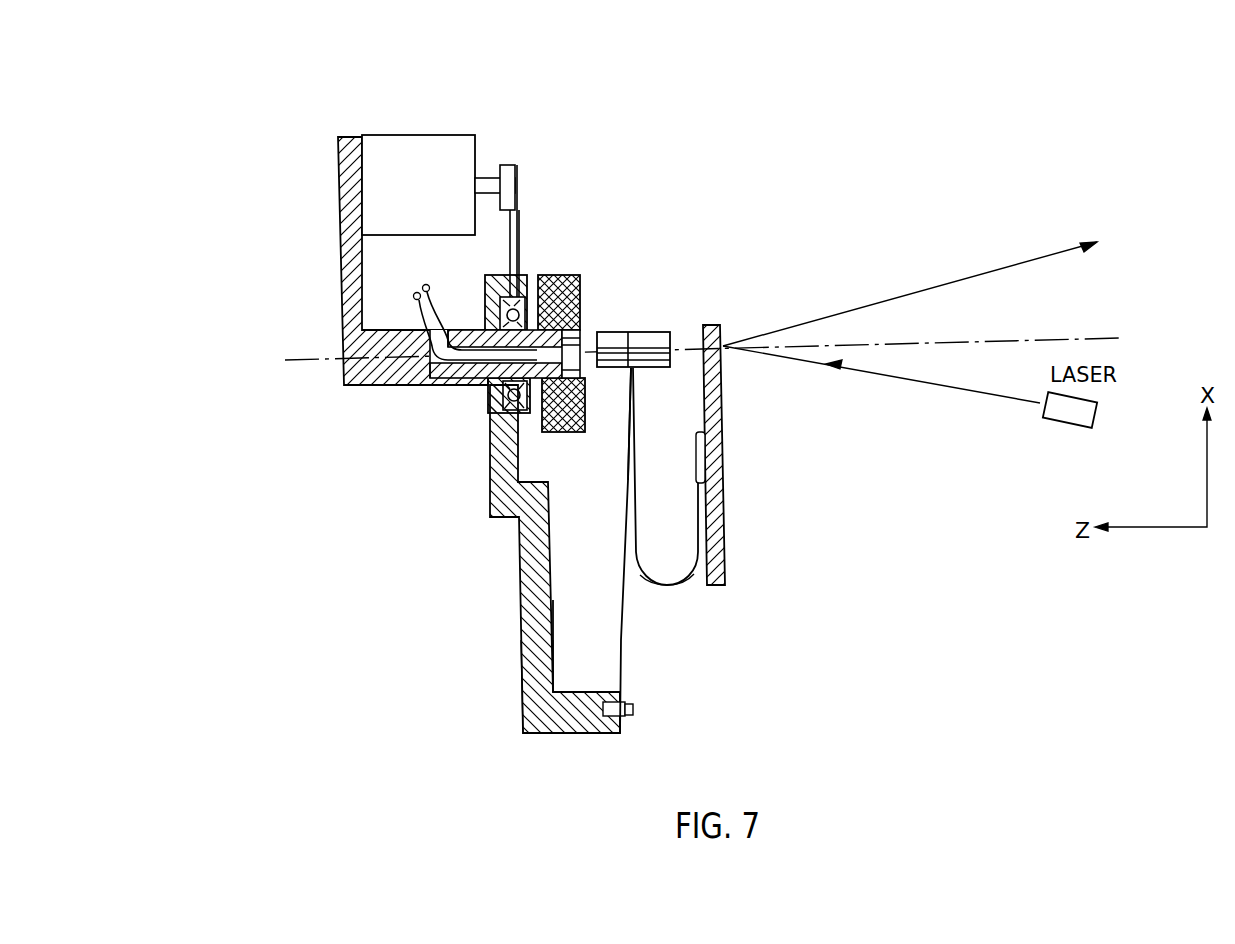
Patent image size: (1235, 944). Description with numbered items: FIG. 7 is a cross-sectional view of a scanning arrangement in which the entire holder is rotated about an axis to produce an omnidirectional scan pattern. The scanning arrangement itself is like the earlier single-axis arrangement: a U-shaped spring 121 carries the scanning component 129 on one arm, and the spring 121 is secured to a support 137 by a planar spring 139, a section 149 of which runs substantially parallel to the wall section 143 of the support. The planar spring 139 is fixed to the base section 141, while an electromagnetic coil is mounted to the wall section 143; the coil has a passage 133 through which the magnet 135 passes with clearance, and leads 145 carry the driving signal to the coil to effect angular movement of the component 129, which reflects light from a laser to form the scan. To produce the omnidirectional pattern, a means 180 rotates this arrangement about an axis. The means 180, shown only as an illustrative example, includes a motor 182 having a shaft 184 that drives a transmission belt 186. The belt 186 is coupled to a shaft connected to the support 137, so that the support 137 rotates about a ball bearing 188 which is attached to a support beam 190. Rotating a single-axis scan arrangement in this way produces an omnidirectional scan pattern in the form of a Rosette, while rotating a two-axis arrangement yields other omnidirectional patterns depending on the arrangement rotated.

The means for rotating the scanning arrangement 180 is at (457, 98).
The motor 182 is at (402, 135).
The shaft 184 is at (490, 173).
The transmission belt 186 is at (520, 228).
The ball bearing 188 is at (520, 297).
The support beam 190 is at (372, 385).
The leads 145 is at (438, 272).
The passage 133 is at (580, 288).
The magnet 135 is at (652, 333).
The wall section 143 is at (490, 483).
The support 137 is at (518, 622).
The planar spring 139 is at (625, 490).
The section of spring 149 is at (617, 630).
The base section 141 is at (552, 733).
The U-shaped spring 121 is at (673, 586).
The component 129 is at (724, 513).